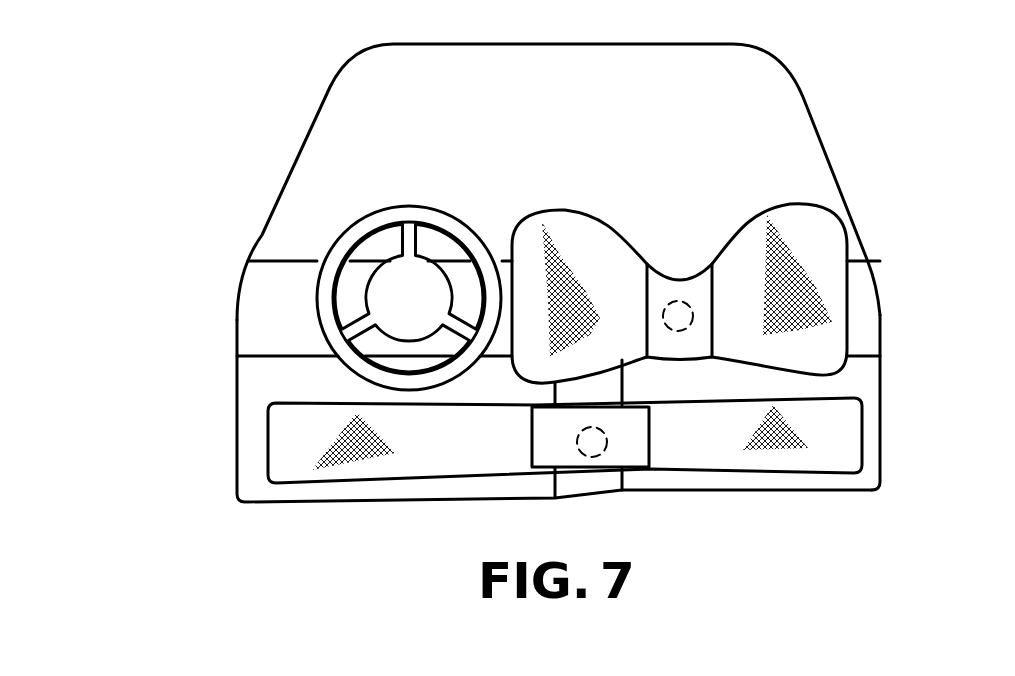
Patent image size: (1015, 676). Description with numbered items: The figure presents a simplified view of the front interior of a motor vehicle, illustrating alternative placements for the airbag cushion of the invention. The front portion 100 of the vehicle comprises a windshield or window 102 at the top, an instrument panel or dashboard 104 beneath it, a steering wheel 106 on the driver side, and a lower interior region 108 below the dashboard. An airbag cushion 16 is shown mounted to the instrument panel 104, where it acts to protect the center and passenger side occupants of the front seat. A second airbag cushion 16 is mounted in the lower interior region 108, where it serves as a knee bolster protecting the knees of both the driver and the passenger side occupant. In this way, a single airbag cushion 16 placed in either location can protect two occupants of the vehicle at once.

The front portion 100 is at (573, 273).
The windshield or window 102 is at (797, 102).
The instrument panel or dashboard 104 is at (868, 346).
The steering wheel 106 is at (409, 212).
The lower interior region 108 is at (252, 376).
The airbag cushion 16 is at (834, 282).